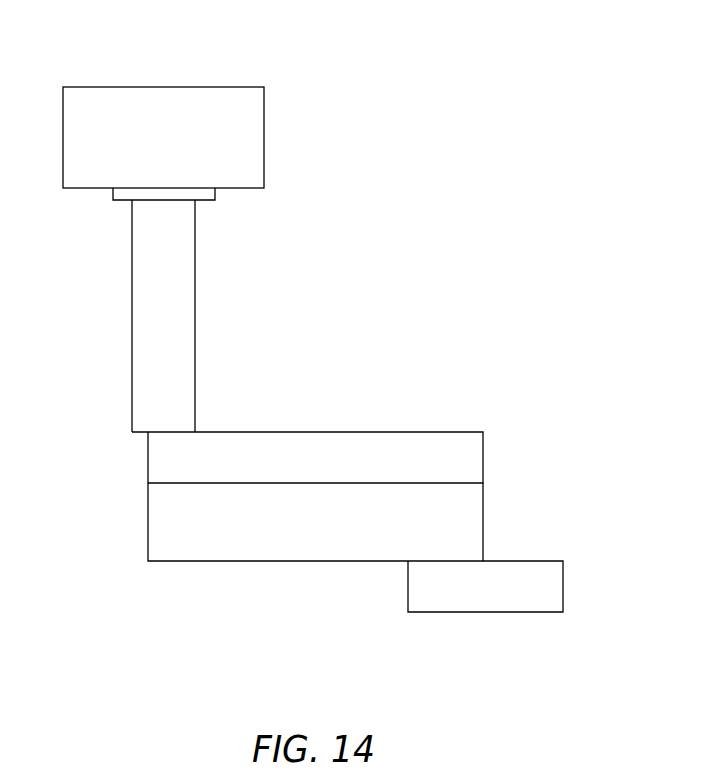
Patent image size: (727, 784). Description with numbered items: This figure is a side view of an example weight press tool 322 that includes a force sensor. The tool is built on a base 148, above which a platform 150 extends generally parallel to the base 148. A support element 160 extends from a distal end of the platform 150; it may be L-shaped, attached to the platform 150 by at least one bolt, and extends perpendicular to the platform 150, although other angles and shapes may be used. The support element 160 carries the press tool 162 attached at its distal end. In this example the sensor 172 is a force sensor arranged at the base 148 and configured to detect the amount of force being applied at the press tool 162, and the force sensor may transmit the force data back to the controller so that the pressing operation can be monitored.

The tool 322 is at (540, 203).
The press tool 162 is at (103, 87).
The support element 160 is at (167, 310).
The platform 150 is at (465, 462).
The base 148 is at (465, 528).
The sensor 172 is at (545, 590).